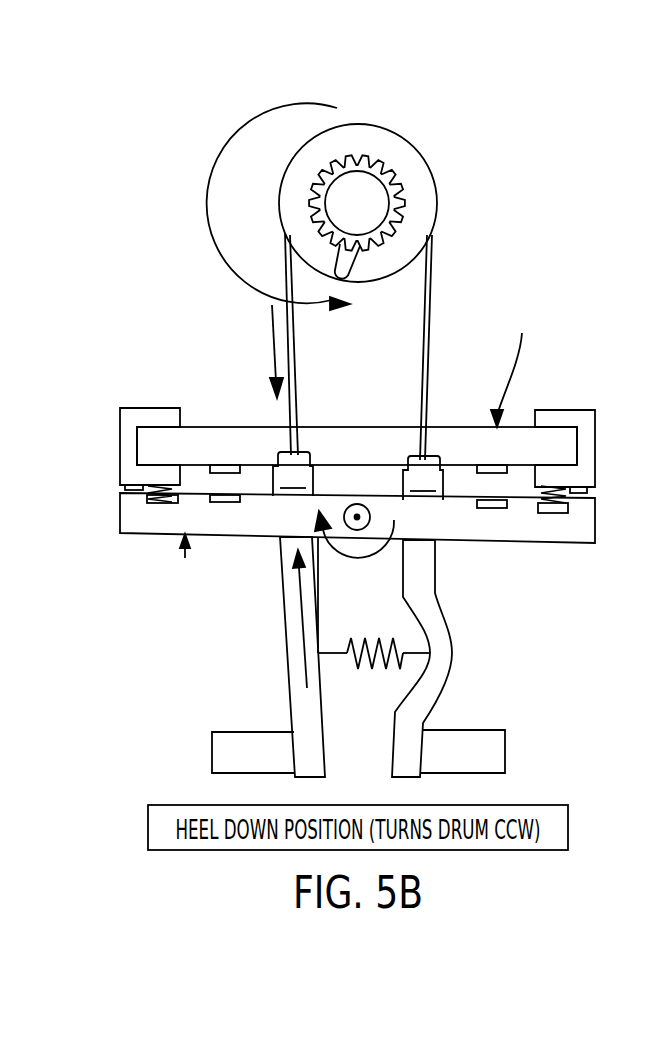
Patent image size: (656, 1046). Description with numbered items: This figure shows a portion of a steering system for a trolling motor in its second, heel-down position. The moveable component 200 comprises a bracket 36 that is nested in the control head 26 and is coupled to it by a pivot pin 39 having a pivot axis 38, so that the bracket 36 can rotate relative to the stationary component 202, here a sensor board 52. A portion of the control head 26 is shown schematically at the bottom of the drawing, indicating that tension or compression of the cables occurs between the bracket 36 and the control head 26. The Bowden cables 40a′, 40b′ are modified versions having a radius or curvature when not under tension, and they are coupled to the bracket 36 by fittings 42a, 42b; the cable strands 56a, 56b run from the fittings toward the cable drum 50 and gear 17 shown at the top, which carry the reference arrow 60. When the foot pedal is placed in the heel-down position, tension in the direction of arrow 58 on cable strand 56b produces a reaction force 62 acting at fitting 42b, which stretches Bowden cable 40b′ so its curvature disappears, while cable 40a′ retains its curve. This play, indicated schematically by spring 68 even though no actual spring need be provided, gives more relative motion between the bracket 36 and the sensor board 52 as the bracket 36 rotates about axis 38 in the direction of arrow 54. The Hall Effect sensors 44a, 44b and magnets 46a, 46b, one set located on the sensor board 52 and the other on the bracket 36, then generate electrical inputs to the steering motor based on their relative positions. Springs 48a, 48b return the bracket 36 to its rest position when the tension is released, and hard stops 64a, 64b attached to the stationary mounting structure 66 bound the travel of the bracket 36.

The drive gear / shaft 17 is at (365, 168).
The control head 26 is at (487, 752).
The bracket 36 is at (545, 523).
The pivot axis 38 is at (358, 520).
The pivot pin 39 is at (357, 504).
The Bowden cable 40a′ is at (438, 662).
The Bowden cable 40b′ is at (298, 680).
The fitting 42a is at (420, 460).
The fitting 42b is at (300, 462).
The sensor 44a is at (495, 465).
The sensor 44b is at (222, 472).
The magnet 46a is at (490, 507).
The magnet 46b is at (225, 503).
The spring 48a is at (555, 512).
The spring 48b is at (163, 500).
The drum 50 is at (365, 145).
The sensor board 52 is at (458, 437).
The arrow 54 is at (357, 555).
The cable strand 56a is at (430, 340).
The cable strand 56b is at (300, 348).
The arrow 58 is at (273, 357).
The drum rotation arrow (CCW) 60 is at (292, 132).
The reaction force 62 is at (302, 630).
The hard stop 64a is at (583, 490).
The hard stop 64b is at (123, 487).
The stationary mounting structure 66 is at (133, 418).
The spring 68 is at (353, 663).
The moveable component 200 is at (198, 578).
The stationary component 202 is at (514, 365).